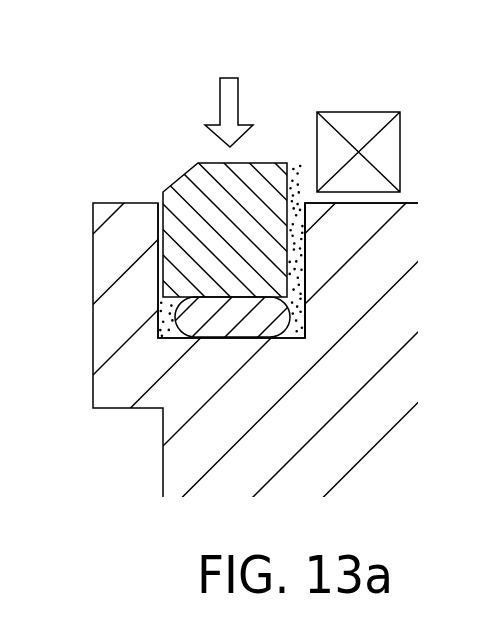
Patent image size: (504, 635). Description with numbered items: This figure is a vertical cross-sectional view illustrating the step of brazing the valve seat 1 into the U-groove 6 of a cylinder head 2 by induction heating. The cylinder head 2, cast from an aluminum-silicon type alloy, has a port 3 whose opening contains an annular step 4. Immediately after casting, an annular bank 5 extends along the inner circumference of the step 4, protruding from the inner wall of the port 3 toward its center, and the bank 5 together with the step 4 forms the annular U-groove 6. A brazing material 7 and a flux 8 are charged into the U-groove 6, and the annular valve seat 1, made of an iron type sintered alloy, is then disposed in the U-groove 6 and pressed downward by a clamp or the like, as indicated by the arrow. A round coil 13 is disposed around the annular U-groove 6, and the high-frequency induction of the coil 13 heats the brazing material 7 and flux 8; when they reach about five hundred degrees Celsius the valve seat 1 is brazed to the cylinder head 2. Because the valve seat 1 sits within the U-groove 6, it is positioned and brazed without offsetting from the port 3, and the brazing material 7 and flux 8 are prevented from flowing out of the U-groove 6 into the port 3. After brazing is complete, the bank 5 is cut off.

The valve seat 1 is at (262, 160).
The cylinder head 2 is at (410, 204).
The port 3 is at (163, 465).
The annular step 4 is at (292, 332).
The annular bank 5 is at (92, 265).
The U-groove 6 is at (302, 240).
The brazing material 7 is at (223, 322).
The flux 8 is at (303, 317).
The round coil 13 is at (355, 110).